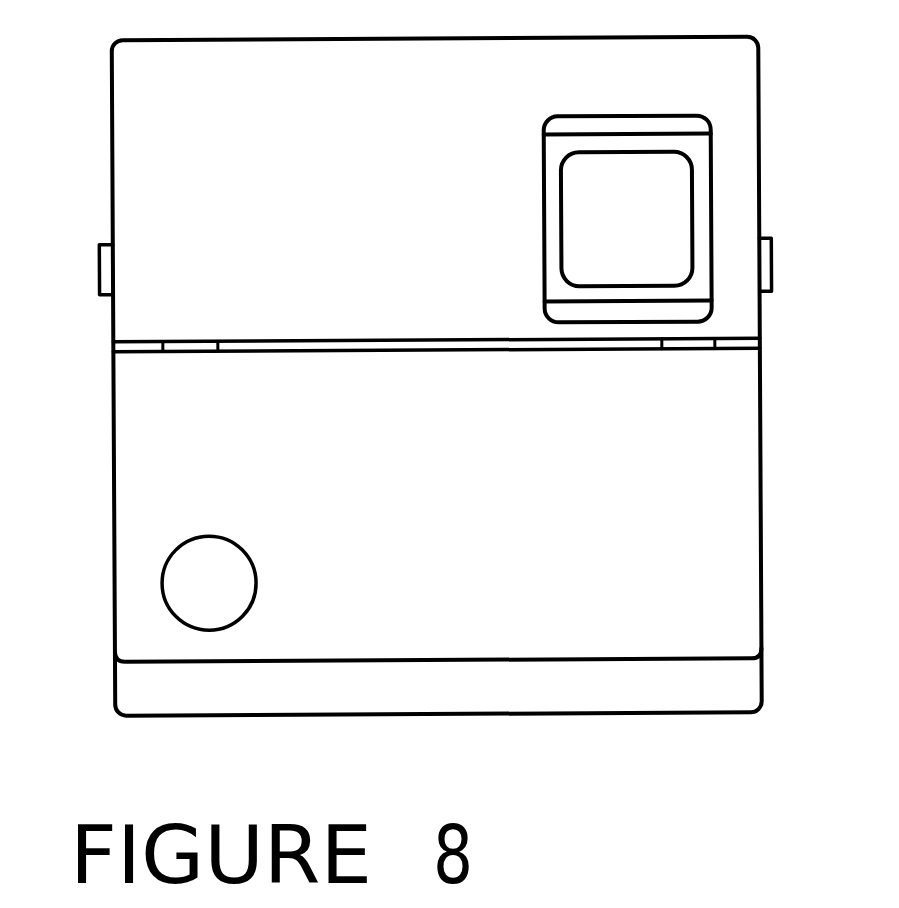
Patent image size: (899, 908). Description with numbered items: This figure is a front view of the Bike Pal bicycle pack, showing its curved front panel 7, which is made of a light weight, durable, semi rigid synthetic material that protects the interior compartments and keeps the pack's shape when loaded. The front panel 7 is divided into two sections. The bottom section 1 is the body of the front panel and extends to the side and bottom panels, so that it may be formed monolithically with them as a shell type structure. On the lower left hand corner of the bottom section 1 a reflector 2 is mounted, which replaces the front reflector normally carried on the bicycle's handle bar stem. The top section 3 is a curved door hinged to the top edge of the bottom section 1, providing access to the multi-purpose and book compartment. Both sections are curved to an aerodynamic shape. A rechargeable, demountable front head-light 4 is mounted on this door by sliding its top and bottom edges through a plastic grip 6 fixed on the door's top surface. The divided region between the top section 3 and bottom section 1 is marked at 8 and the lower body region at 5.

The bottom section of front panel 1 is at (192, 482).
The reflector 2 is at (188, 608).
The top section of front panel 3 is at (253, 203).
The front head-light 4 is at (638, 190).
The lower housing portion 5 is at (497, 340).
The plastic grip 6 is at (575, 135).
The front panel 7 is at (380, 515).
The hinge 8 is at (218, 340).